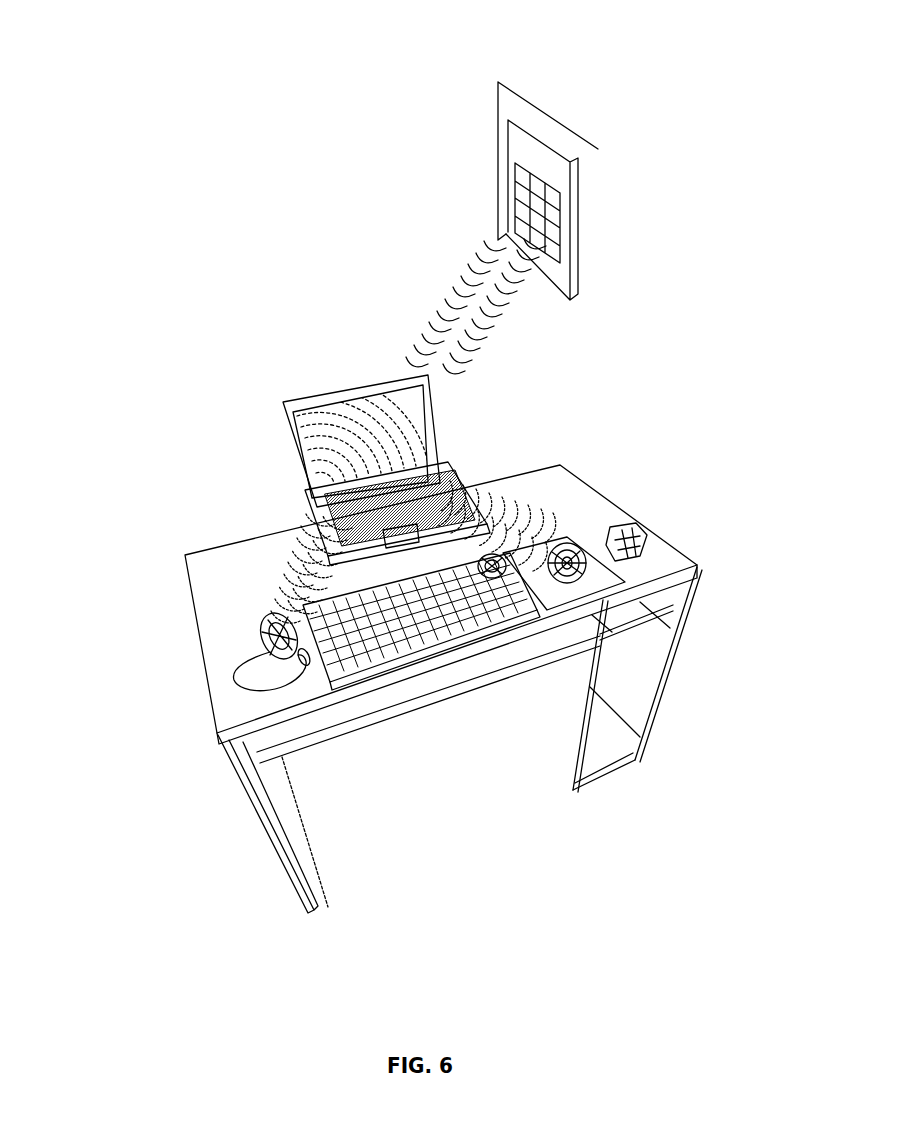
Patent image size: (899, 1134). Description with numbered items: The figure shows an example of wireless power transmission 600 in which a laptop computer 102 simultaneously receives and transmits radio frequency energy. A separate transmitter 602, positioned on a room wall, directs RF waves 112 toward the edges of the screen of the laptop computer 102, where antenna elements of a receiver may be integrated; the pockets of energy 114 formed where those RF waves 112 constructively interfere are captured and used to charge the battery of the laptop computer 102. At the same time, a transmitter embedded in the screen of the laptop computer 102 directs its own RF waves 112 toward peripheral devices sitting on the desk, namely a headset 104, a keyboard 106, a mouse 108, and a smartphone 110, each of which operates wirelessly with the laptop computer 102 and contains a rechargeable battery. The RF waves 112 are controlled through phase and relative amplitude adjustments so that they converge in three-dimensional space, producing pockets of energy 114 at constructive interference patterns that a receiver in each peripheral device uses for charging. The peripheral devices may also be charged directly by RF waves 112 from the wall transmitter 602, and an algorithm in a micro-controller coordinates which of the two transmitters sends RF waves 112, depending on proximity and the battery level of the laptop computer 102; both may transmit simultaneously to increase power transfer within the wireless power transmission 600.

The wireless power transmission 600 is at (95, 98).
The transmitter 602 is at (522, 150).
The RF waves 112 is at (455, 305).
The laptop computer 102 is at (300, 395).
The mouse 108 is at (627, 643).
The keyboard 106 is at (378, 648).
The smartphone 110 is at (642, 557).
The pockets of energy 114 is at (628, 528).
The headset 104 is at (235, 682).